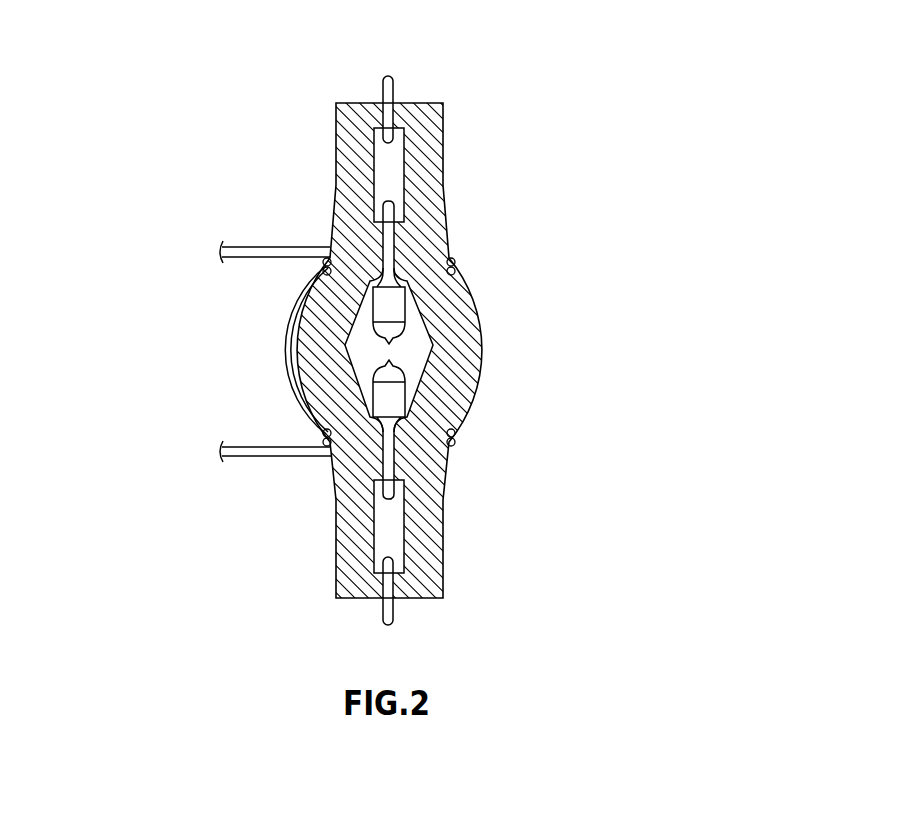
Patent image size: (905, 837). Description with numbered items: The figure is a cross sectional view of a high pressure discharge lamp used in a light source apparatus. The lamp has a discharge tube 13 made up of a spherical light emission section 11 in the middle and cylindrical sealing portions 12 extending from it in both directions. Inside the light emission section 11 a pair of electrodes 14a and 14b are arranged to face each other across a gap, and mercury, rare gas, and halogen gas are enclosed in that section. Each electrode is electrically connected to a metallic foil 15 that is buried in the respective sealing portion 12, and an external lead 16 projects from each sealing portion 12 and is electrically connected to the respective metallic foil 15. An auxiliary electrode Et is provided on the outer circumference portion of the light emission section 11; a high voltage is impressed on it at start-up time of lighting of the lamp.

The light emission section 11 is at (318, 360).
The sealing portion 12 is at (442, 125).
The discharge tube 13 is at (394, 389).
The electrode 14a is at (396, 305).
The electrode 14b is at (393, 396).
The metallic foil 15 is at (389, 193).
The external lead 16 is at (391, 78).
The auxiliary electrode Et is at (292, 324).